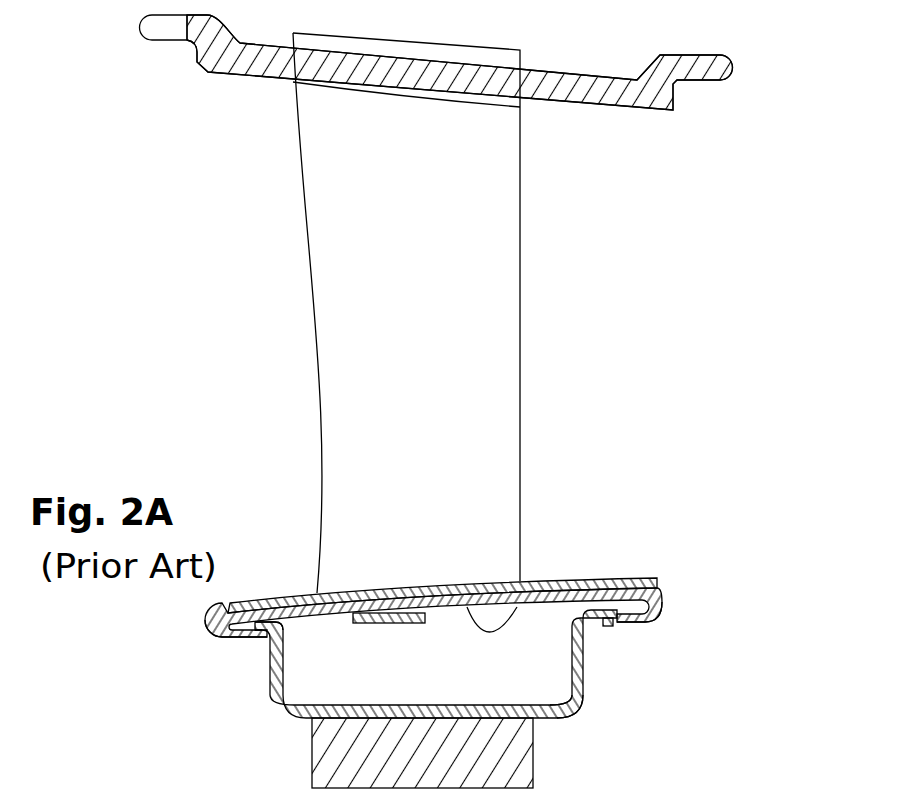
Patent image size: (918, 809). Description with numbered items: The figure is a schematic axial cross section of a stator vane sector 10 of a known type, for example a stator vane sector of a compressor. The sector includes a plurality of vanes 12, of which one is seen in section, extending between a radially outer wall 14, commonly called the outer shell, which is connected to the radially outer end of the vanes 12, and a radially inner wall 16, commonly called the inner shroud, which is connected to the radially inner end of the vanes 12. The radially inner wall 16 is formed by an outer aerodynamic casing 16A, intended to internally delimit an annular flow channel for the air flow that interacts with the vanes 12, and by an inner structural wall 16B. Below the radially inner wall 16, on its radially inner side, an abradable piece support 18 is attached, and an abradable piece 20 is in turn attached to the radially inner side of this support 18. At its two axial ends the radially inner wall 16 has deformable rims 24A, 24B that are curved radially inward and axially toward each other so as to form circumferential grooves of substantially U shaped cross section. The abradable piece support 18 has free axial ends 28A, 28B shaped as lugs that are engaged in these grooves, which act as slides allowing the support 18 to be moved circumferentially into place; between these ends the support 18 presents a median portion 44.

The stator vane sector 10 is at (466, 408).
The vanes 12 is at (520, 257).
The radially outer wall 14 is at (645, 110).
The radially inner wall 16 is at (435, 577).
The outer aerodynamic casing 16A is at (588, 590).
The inner structural wall 16B is at (517, 606).
The abradable piece support 18 is at (270, 676).
The abradable piece 20 is at (533, 757).
The deformable rim 24A is at (233, 638).
The deformable rim 24B is at (623, 633).
The free axial end 28A is at (253, 640).
The free axial end 28B is at (610, 626).
The median portion 44 is at (570, 712).